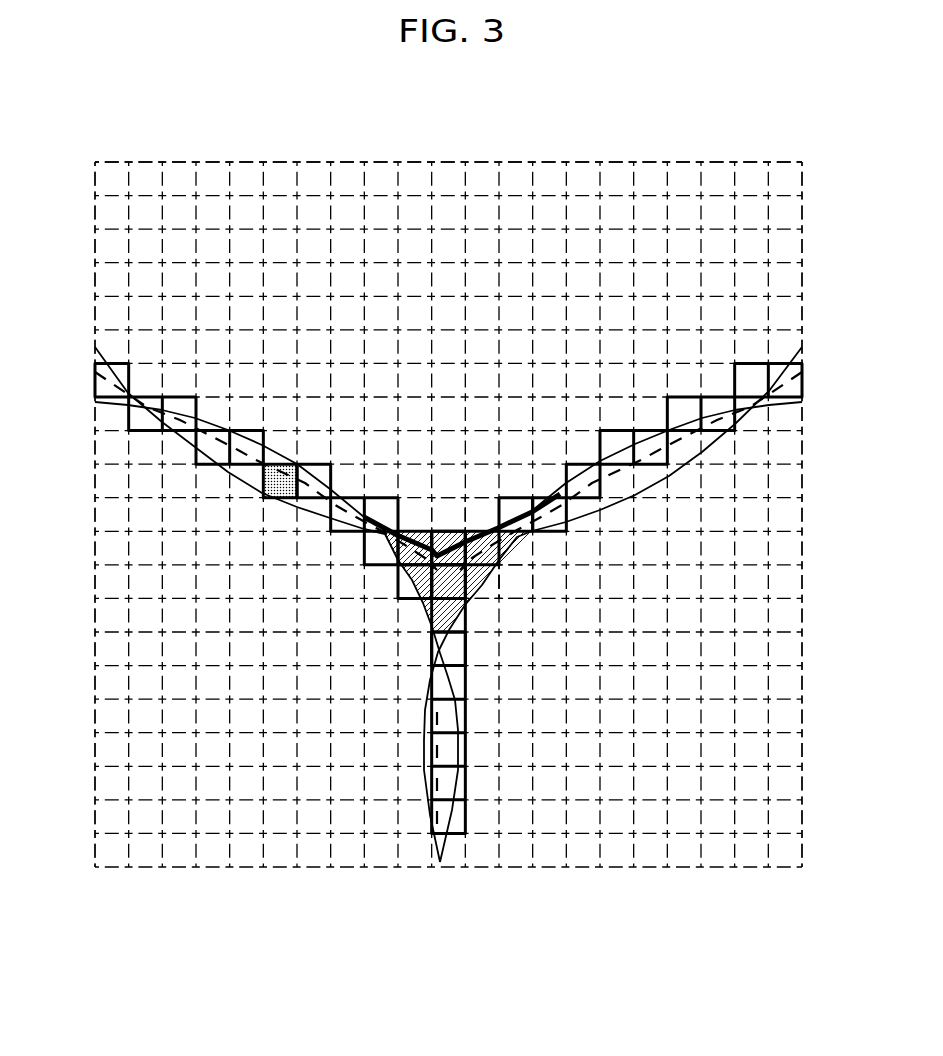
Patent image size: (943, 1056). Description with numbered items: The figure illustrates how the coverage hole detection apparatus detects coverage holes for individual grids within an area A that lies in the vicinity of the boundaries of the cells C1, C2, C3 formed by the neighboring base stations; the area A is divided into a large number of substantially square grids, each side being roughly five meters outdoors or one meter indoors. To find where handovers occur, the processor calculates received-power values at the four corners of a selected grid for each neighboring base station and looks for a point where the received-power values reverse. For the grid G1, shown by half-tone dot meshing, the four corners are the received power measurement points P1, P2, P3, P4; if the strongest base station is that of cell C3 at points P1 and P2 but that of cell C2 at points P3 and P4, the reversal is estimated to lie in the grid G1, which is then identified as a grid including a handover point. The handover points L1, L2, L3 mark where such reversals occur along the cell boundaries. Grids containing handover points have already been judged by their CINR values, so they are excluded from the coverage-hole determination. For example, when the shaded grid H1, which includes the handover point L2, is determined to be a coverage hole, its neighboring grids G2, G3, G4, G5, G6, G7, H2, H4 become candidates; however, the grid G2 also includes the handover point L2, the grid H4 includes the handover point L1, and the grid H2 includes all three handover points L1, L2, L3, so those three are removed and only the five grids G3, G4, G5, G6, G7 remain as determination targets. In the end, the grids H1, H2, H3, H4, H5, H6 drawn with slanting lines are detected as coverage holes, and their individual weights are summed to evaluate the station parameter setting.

The area A is at (197, 158).
The cell C1 is at (801, 630).
The cell C2 is at (95, 632).
The cell C3 is at (462, 158).
The handover point L1 is at (436, 872).
The handover point L2 is at (790, 381).
The handover point L3 is at (100, 381).
The received power measurement point P1 is at (298, 465).
The received power measurement point P2 is at (269, 463).
The received power measurement point P3 is at (289, 502).
The received power measurement point P4 is at (263, 497).
The grid G1 is at (268, 499).
The grid G2 is at (512, 497).
The grid G3 is at (518, 541).
The grid G4 is at (518, 576).
The grid G5 is at (485, 590).
The grid G6 is at (455, 508).
The grid G7 is at (480, 512).
The coverage hole grid H1 is at (478, 528).
The coverage hole grid H2 is at (450, 532).
The coverage hole grid H3 is at (392, 548).
The coverage hole grid H4 is at (468, 610).
The coverage hole grid H5 is at (400, 592).
The coverage hole grid H6 is at (462, 652).